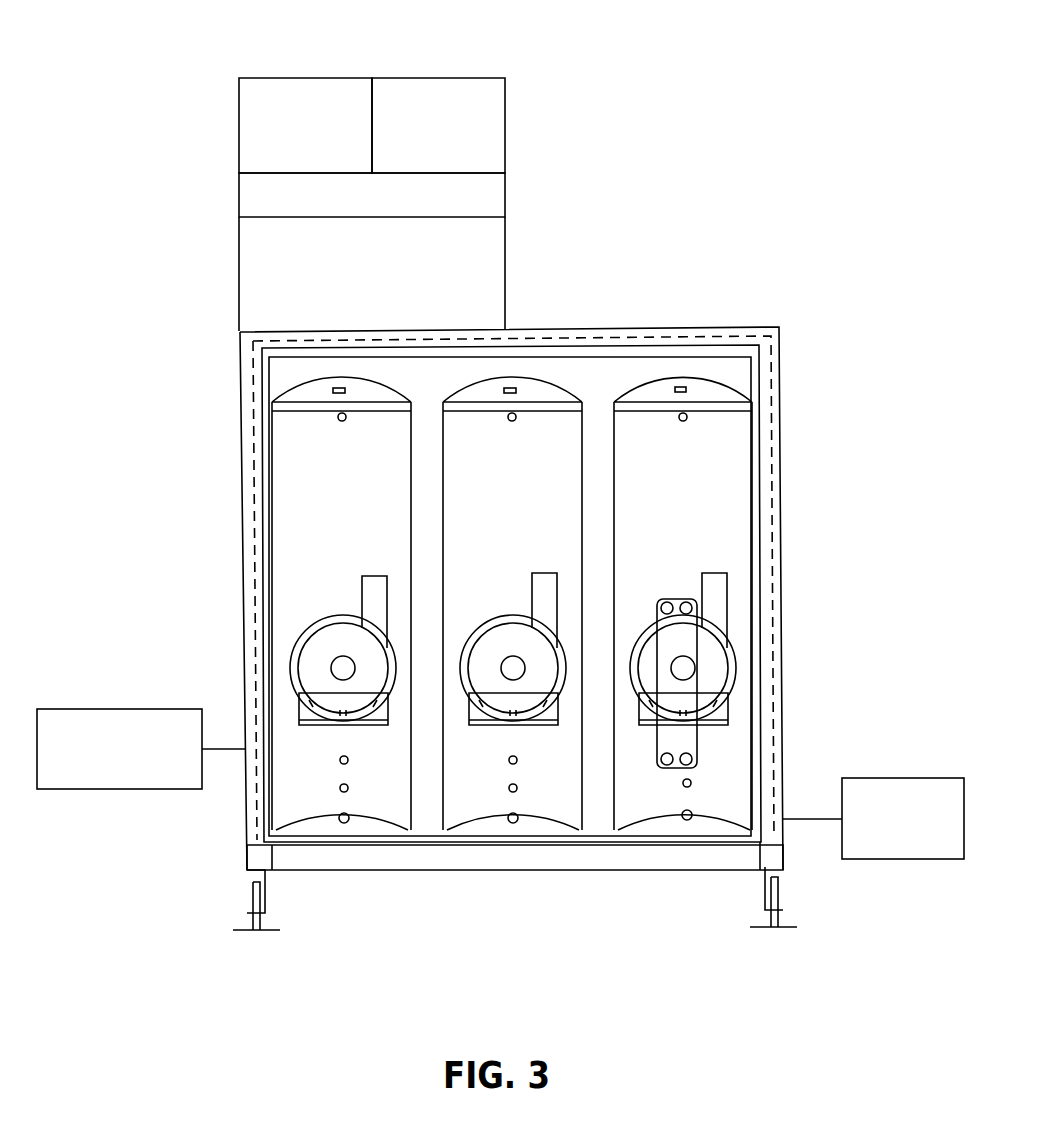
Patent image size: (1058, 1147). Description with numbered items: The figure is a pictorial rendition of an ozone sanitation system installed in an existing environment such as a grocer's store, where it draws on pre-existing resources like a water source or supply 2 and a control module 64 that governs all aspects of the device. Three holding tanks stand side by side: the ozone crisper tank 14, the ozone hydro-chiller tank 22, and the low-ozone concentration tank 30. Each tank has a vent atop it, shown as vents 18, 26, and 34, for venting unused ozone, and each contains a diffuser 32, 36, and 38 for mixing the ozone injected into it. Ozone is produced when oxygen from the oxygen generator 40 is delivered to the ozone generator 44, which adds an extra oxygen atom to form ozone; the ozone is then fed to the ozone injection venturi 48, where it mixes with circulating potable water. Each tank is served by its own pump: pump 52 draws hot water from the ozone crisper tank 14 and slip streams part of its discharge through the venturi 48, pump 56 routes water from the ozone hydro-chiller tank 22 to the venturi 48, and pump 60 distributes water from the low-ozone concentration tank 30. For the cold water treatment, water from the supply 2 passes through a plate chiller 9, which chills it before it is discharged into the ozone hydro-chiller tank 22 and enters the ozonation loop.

The water source or supply 2 is at (155, 708).
The plate chiller 9 is at (697, 683).
The ozone crisper tank 14 is at (583, 503).
The vent 18 is at (510, 388).
The ozone hydro-chiller tank 22 is at (748, 432).
The vent 26 is at (681, 387).
The low-ozone concentration tank 30 is at (408, 493).
The diffuser 32 is at (540, 822).
The vent 34 is at (340, 388).
The diffuser 36 is at (703, 818).
The diffuser 38 is at (365, 823).
The oxygen generator 40 is at (310, 77).
The ozone generator 44 is at (403, 77).
The ozone injection venturi 48 is at (240, 200).
The pump 52 is at (548, 573).
The pump 56 is at (730, 601).
The pump 60 is at (362, 582).
The control module 64 is at (927, 778).